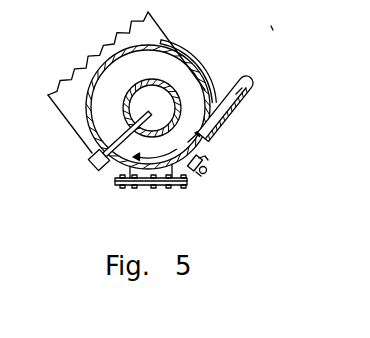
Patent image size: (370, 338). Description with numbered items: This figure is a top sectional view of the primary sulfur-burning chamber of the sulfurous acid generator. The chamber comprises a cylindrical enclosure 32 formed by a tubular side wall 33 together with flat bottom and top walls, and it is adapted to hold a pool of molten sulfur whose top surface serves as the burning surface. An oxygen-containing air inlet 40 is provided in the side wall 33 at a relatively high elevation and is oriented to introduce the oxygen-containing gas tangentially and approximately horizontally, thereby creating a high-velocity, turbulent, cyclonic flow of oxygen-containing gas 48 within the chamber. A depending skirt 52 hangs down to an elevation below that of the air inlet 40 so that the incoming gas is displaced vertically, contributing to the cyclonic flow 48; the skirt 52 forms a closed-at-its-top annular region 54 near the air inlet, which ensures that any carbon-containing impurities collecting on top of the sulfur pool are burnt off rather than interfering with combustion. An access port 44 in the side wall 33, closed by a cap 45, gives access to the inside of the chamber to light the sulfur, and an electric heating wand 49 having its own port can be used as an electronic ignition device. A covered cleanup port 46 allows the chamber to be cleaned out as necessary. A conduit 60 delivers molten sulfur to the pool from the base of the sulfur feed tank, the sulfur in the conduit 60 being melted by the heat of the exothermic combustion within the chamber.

The cylindrical enclosure 32 is at (227, 52).
The tubular side wall 33 is at (166, 40).
The oxygen-containing air inlet 40 is at (240, 104).
The access port 44 is at (210, 160).
The cap 45 is at (203, 174).
The covered cleanup port 46 is at (157, 186).
The cyclonic flow of oxygen-containing gas 48 is at (167, 145).
The electric heating wand 49 is at (91, 158).
The depending skirt 52 is at (136, 88).
The annular region 54 is at (165, 70).
The conduit 60 is at (66, 116).